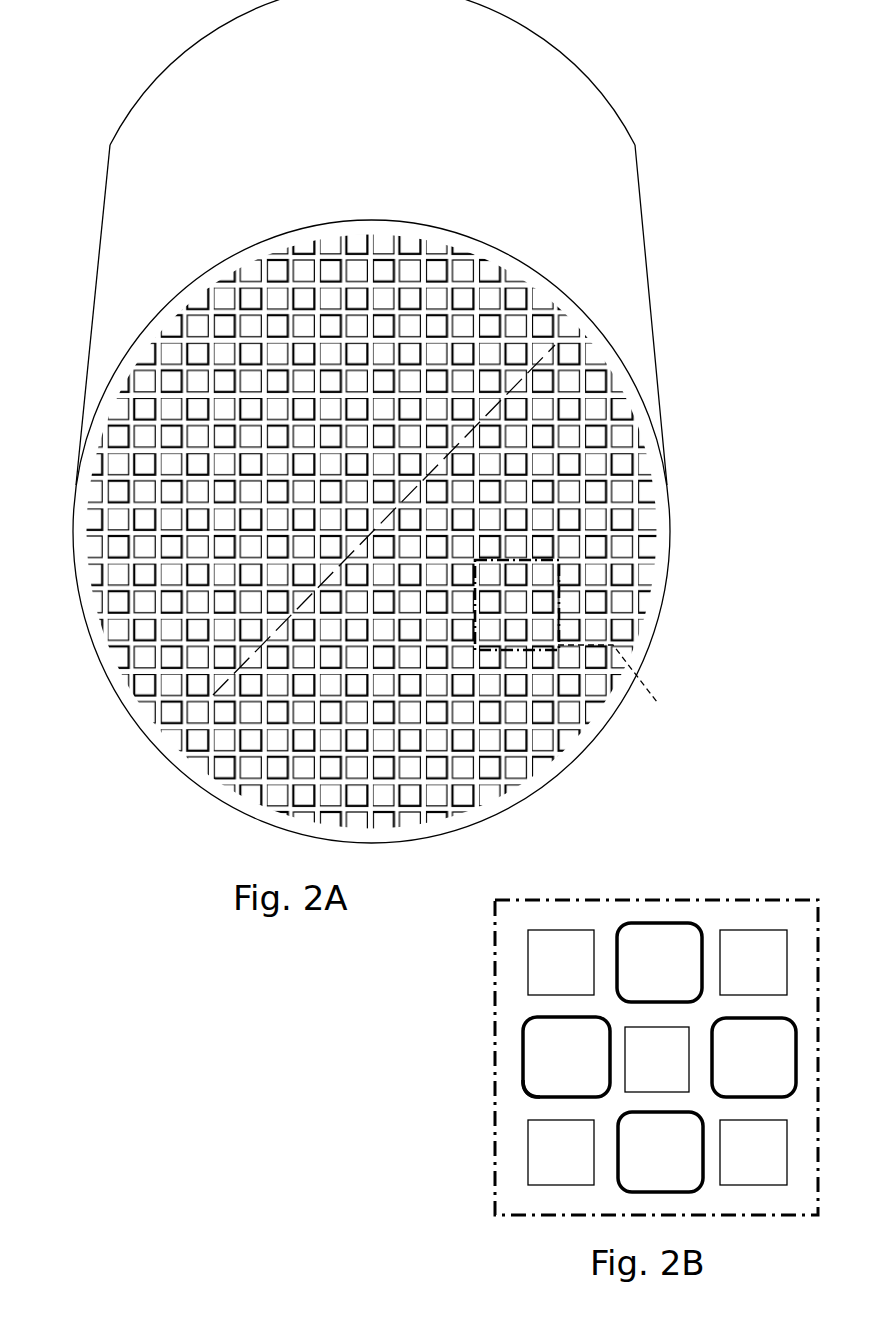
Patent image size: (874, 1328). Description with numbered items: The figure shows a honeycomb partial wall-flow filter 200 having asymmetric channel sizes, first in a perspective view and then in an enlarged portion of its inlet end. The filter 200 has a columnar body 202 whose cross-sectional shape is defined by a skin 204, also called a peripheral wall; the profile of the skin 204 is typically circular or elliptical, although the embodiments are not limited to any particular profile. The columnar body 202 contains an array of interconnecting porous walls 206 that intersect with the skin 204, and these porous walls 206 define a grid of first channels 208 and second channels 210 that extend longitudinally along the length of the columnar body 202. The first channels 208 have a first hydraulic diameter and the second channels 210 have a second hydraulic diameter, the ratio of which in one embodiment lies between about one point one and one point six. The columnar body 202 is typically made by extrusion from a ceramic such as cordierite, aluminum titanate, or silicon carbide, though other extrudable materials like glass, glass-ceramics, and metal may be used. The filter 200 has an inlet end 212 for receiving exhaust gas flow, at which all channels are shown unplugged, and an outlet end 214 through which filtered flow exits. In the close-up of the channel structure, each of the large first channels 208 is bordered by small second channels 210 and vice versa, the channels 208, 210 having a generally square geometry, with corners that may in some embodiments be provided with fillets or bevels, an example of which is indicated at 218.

In FIG. 2A, the honeycomb partial wall-flow filter 200 is at (373, 242).
In FIG. 2A, the columnar body 202 is at (617, 250).
In FIG. 2A, the skin 204 is at (590, 734).
In FIG. 2A, the porous walls 206 is at (610, 500).
In FIG. 2B, the porous walls 206 is at (708, 940).
In FIG. 2A, the first channels 208 is at (543, 607).
In FIG. 2B, the first channels 208 is at (545, 1045).
In FIG. 2A, the second channels 210 is at (213, 695).
In FIG. 2B, the second channels 210 is at (552, 1152).
In FIG. 2A, the inlet end 212 is at (652, 642).
In FIG. 2B, the inlet end 212 is at (656, 1057).
In FIG. 2A, the outlet end 214 is at (584, 81).
In FIG. 2B, the rounded corner of die 218 is at (527, 1097).